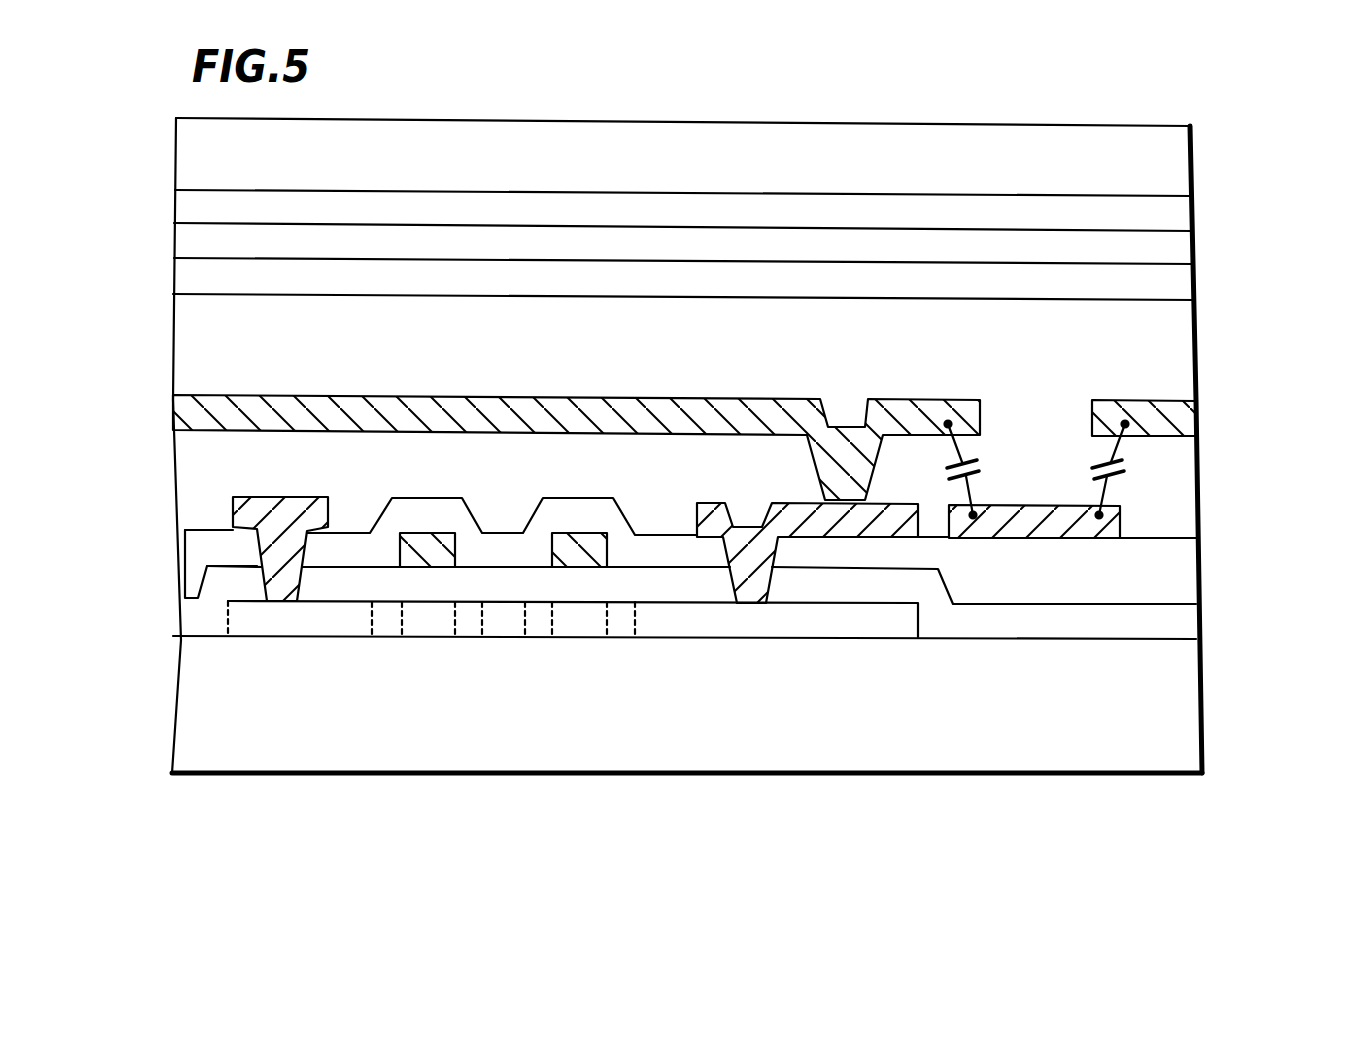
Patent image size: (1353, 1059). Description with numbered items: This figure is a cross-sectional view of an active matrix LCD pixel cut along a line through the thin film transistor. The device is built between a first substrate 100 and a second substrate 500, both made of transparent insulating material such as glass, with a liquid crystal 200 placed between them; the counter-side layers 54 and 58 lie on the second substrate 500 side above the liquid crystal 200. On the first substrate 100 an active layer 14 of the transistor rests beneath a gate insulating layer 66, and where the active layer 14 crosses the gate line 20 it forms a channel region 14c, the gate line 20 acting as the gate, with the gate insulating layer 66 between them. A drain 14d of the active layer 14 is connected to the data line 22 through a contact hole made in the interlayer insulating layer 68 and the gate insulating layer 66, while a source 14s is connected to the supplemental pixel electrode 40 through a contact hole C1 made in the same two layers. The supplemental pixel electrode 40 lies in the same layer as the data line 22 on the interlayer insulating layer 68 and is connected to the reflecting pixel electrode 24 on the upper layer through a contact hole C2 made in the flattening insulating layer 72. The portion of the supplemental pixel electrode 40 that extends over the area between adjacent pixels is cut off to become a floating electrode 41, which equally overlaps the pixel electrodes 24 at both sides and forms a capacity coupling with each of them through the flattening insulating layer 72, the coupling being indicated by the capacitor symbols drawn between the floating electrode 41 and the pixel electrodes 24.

The second substrate 500 is at (1168, 163).
The counter electrode 54 is at (1168, 216).
The gate insulating layer 66 is at (1168, 253).
The alignment film 58 is at (1168, 295).
The liquid crystal 200 is at (1168, 356).
The pixel electrode 24 is at (200, 412).
The flattening insulating layer 72 is at (1165, 481).
The floating electrode 41 is at (1099, 515).
The supplemental pixel electrode 40 is at (883, 520).
The interlayer insulating layer 68 is at (1163, 573).
The first substrate 100 is at (1160, 712).
The data line 22 is at (247, 510).
The gate line 20 is at (428, 543).
The active layer 14 is at (248, 620).
The drain 14d is at (337, 623).
The channel region 14c is at (435, 620).
The source 14s is at (697, 623).
The contact hole C1 is at (748, 540).
The contact hole C2 is at (843, 413).